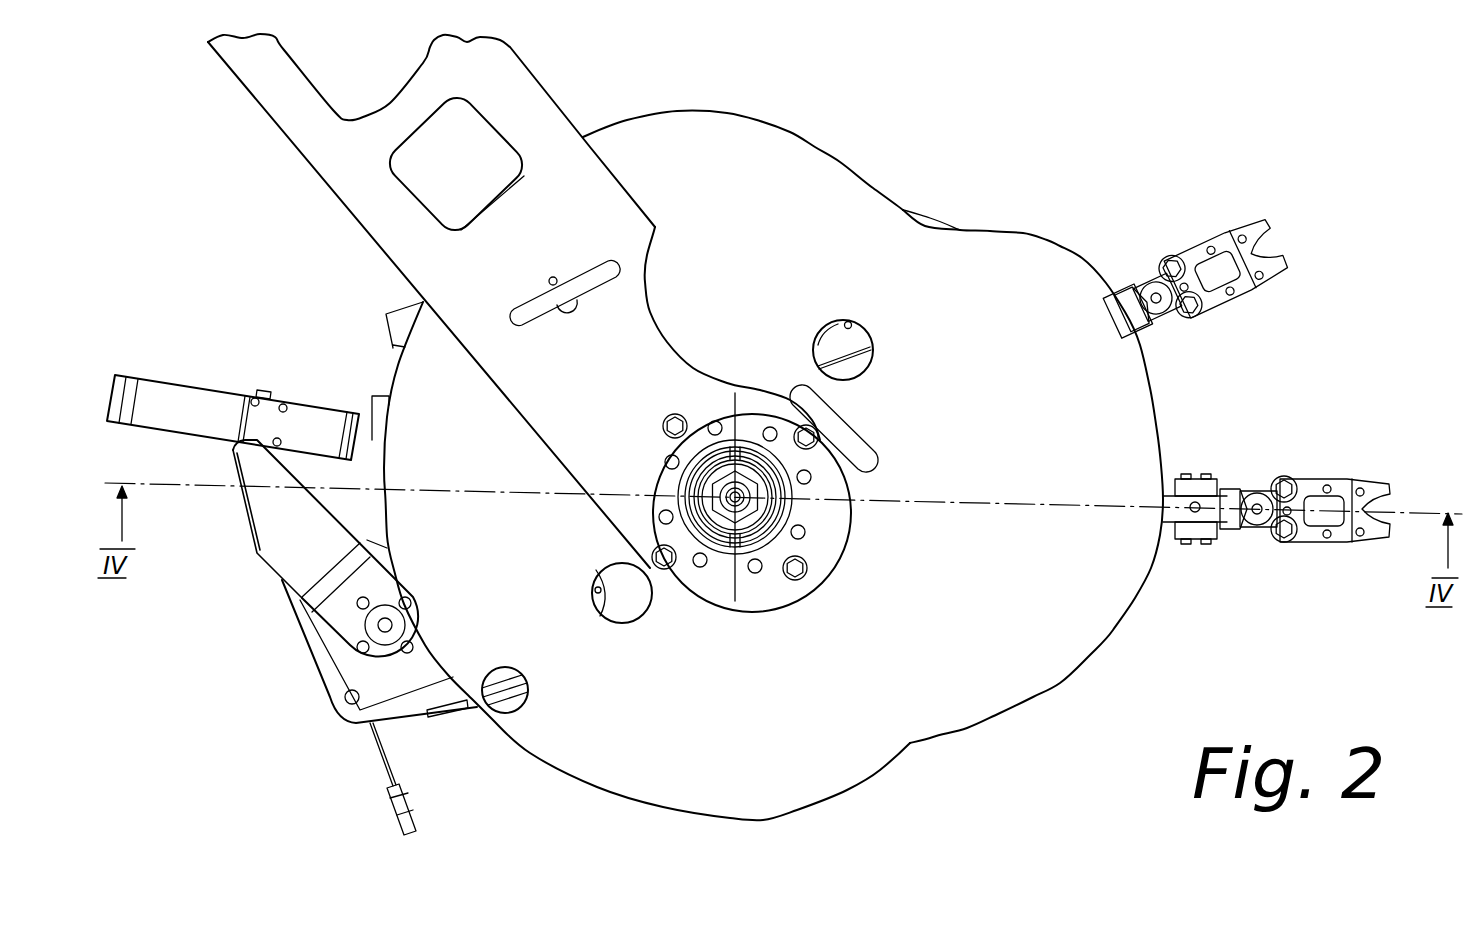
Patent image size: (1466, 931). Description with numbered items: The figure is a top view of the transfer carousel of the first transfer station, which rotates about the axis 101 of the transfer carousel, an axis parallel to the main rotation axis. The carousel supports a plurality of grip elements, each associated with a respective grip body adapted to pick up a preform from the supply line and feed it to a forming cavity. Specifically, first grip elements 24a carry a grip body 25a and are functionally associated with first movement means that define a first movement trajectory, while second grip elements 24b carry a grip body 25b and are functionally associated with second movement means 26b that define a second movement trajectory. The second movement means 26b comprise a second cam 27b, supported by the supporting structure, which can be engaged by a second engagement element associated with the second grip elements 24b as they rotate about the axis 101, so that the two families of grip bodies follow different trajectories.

The second movement means 26b is at (866, 168).
The second cam 27b is at (1068, 243).
The first grip elements 24a is at (1186, 232).
The grip body 25a is at (1246, 298).
The second grip elements 24b is at (1270, 472).
The grip body 25b is at (1350, 478).
The axis of the transfer carousel 101 is at (770, 522).